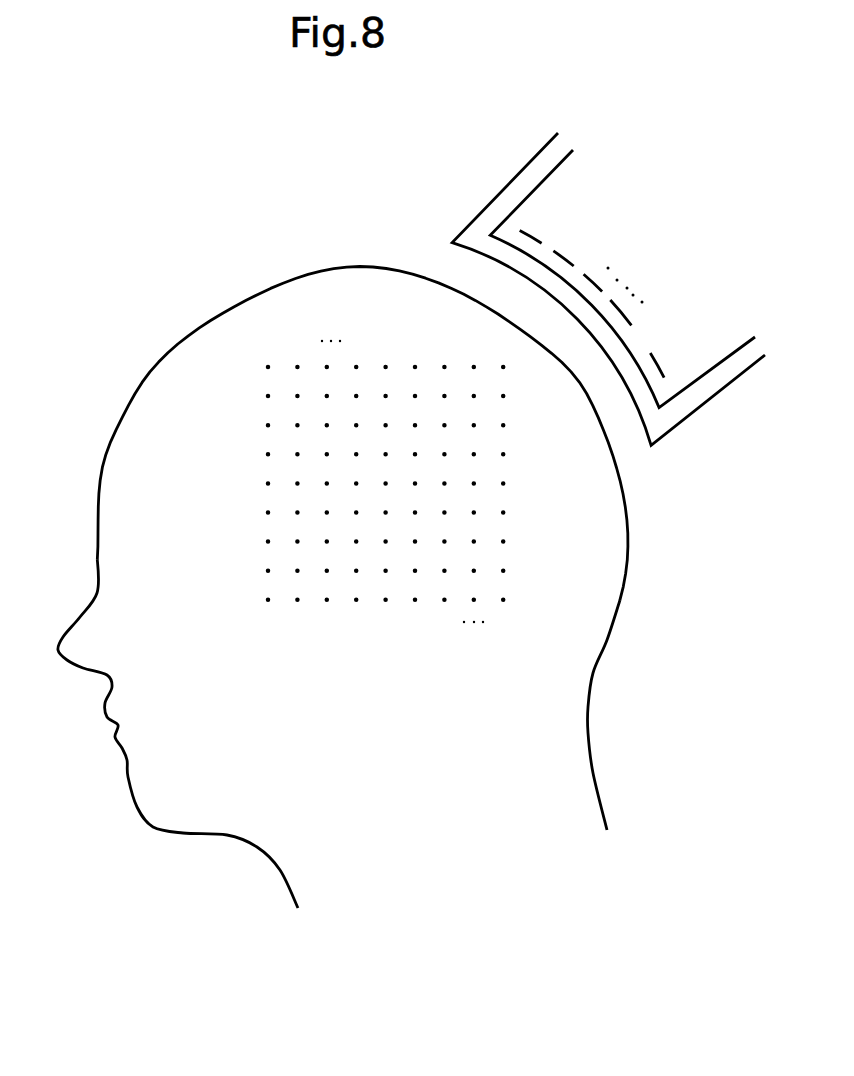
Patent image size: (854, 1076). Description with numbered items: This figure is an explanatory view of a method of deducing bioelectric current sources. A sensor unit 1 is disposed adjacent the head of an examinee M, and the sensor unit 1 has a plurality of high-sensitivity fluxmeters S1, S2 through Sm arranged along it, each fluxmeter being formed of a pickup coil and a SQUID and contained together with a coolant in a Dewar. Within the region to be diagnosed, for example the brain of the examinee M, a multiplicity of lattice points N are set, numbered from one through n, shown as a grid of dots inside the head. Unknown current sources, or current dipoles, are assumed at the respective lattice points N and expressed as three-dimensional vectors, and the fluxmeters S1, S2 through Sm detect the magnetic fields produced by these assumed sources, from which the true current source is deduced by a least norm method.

The sensor unit 1 is at (495, 199).
The examinee M is at (141, 383).
The lattice points N is at (351, 607).
The last lattice point n is at (487, 621).
The fluxmeter S1 is at (540, 222).
The fluxmeter S2 is at (576, 244).
The fluxmeter Sm is at (672, 353).